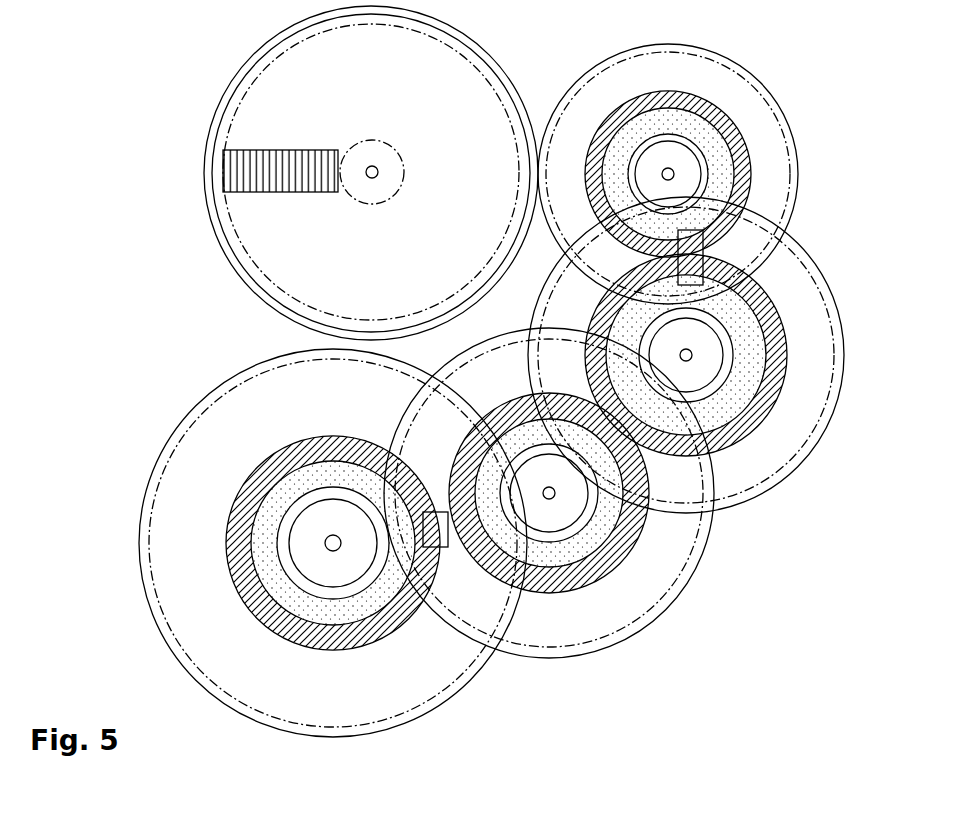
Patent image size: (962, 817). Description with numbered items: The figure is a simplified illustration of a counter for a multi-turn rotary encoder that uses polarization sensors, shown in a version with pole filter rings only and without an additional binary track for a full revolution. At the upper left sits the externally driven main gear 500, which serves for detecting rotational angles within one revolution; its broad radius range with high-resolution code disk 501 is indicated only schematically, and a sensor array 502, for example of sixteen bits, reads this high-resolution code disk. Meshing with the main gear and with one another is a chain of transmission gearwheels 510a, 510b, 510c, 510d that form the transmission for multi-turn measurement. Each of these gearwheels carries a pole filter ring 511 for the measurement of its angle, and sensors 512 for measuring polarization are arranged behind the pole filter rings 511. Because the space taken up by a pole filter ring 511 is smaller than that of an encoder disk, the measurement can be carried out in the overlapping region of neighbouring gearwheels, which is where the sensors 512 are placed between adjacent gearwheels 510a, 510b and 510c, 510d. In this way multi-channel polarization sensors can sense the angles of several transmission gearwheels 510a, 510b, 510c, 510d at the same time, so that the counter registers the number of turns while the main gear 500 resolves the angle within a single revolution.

The externally driven main gear 500 is at (218, 110).
The broad radius range with high-resolution code disk 501 is at (298, 98).
The sensor array for sensing the high-resolution code disk 502 is at (262, 183).
The transmission gearwheel 510a is at (790, 155).
The transmission gearwheel 510b is at (780, 442).
The transmission gearwheel 510c is at (650, 583).
The transmission gearwheel 510d is at (150, 555).
The pole filter ring 511 is at (630, 290).
The sensors for measuring polarization 512 is at (700, 268).